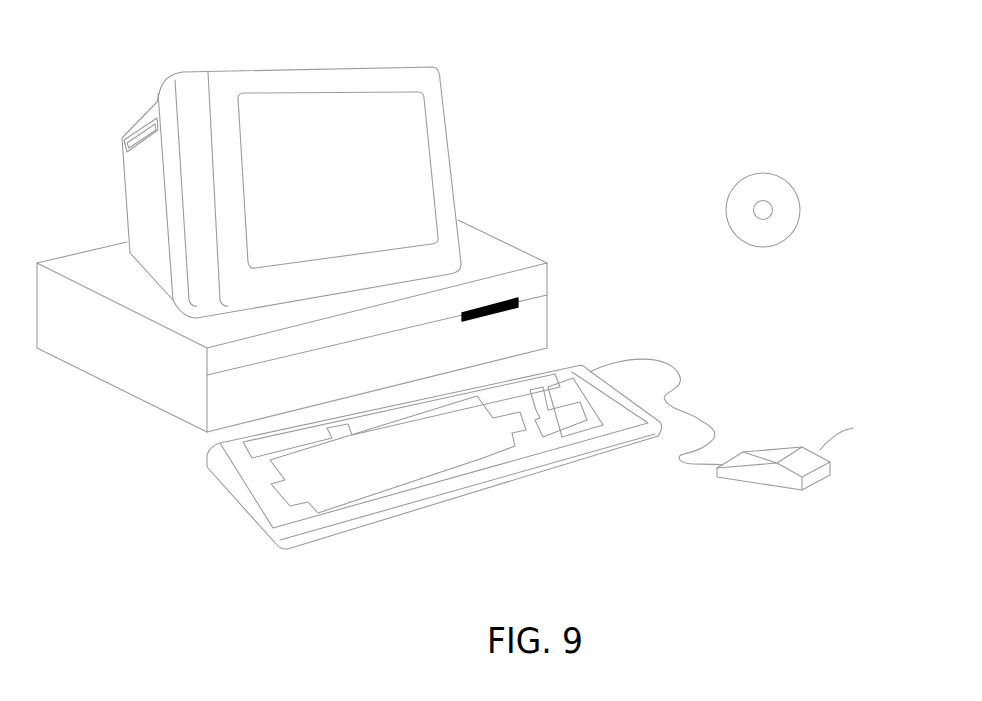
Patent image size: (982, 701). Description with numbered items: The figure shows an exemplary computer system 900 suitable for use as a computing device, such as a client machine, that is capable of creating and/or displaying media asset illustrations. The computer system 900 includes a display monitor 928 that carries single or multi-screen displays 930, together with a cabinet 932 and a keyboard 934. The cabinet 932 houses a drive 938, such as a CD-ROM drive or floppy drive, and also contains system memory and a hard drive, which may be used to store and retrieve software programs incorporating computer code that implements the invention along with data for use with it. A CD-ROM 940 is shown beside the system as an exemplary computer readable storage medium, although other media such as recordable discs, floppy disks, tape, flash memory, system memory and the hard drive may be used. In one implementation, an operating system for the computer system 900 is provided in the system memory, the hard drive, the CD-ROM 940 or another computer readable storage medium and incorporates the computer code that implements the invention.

The computer system 900 is at (656, 68).
The display monitor 928 is at (455, 193).
The displays 930 is at (408, 137).
The cabinet 932 is at (173, 415).
The keyboard 934 is at (440, 502).
The drive 938 is at (518, 298).
The CD-ROM 940 is at (783, 175).